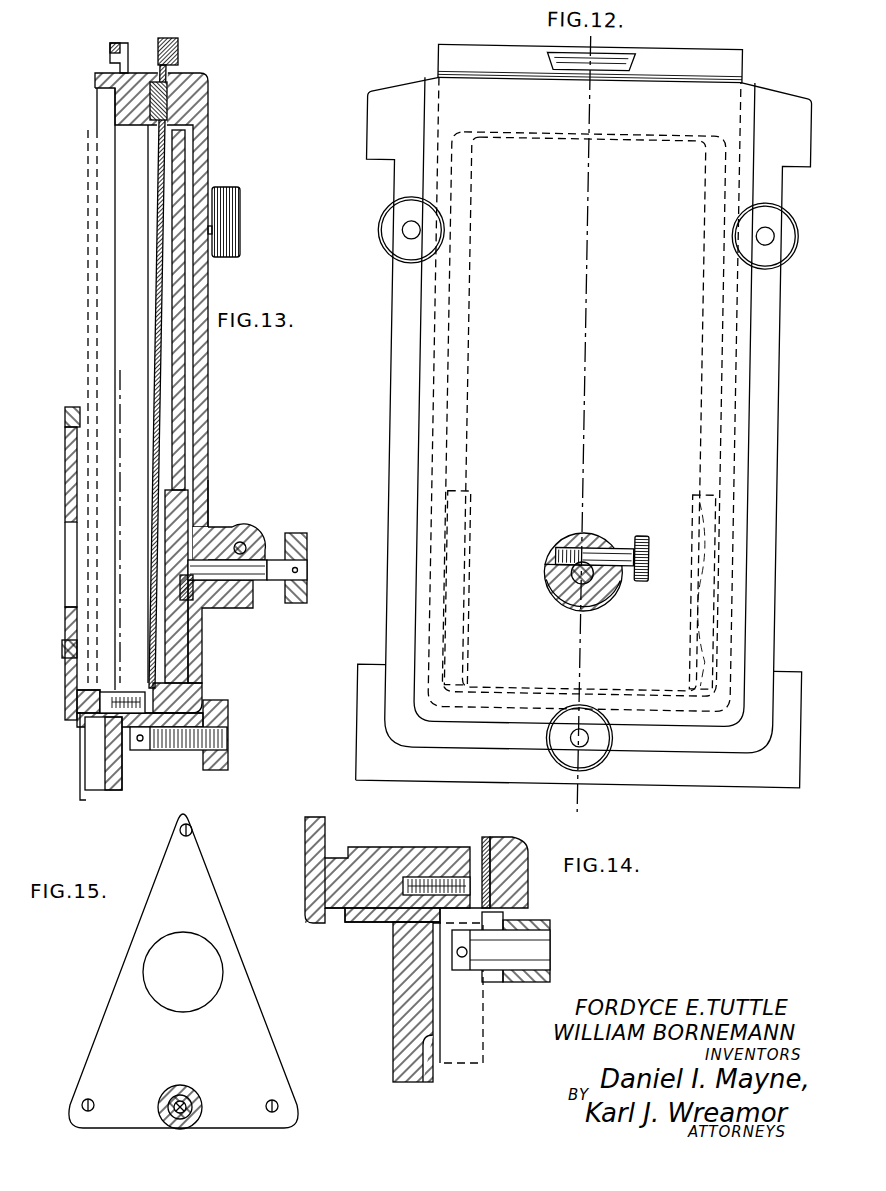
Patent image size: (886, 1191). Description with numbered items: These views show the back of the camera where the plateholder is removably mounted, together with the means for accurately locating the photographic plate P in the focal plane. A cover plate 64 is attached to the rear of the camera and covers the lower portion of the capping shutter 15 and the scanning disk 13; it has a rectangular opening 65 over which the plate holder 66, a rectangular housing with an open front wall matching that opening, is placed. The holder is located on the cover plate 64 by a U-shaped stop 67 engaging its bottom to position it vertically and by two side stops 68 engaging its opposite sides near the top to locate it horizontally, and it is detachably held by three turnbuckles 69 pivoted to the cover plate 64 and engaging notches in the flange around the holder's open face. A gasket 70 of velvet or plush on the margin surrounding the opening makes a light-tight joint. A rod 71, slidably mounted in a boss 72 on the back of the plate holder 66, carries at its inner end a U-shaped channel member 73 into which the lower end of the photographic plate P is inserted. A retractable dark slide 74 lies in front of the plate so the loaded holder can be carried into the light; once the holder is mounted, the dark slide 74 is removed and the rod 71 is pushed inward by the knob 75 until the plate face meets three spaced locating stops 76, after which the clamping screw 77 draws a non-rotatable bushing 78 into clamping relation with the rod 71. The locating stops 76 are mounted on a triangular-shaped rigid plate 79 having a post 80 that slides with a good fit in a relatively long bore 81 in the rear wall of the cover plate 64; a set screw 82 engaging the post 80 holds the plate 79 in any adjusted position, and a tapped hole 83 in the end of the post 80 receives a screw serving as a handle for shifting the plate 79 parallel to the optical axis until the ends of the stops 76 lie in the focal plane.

In FIG. 12, the scanning disk 13 is at (577, 36).
In FIG. 13, the capping shutter 15 is at (117, 586).
In FIG. 13, the photographic plate P is at (185, 372).
In FIG. 13, the cover plate 64 is at (115, 107).
In FIG. 12, the rectangular opening 65 is at (663, 136).
In FIG. 13, the rectangular opening 65 is at (137, 127).
In FIG. 12, the plate holder 66 is at (584, 414).
In FIG. 13, the plate holder 66 is at (204, 501).
In FIG. 12, the U-shaped stop 67 is at (579, 726).
In FIG. 12, the side stops 68 is at (792, 108).
In FIG. 12, the turnbuckles 69 is at (404, 237).
In FIG. 13, the turnbuckles 69 is at (229, 187).
In FIG. 14, the turnbuckles 69 is at (525, 972).
In FIG. 13, the gasket 70 is at (149, 80).
In FIG. 12, the rod 71 is at (563, 590).
In FIG. 13, the rod 71 is at (214, 568).
In FIG. 12, the boss 72 is at (598, 606).
In FIG. 13, the boss 72 is at (241, 606).
In FIG. 12, the U-shaped channel member 73 is at (492, 691).
In FIG. 13, the U-shaped channel member 73 is at (186, 684).
In FIG. 12, the dark slide 74 is at (432, 80).
In FIG. 13, the dark slide 74 is at (158, 335).
In FIG. 13, the knob 75 is at (305, 598).
In FIG. 13, the locating stops 76 is at (73, 407).
In FIG. 15, the locating stops 76 is at (193, 827).
In FIG. 12, the clamping screw 77 is at (616, 548).
In FIG. 13, the clamping screw 77 is at (246, 543).
In FIG. 12, the non-rotatable bushing 78 is at (566, 548).
In FIG. 13, the non-rotatable bushing 78 is at (243, 542).
In FIG. 13, the triangular-shaped rigid plate 79 is at (65, 484).
In FIG. 14, the triangular-shaped rigid plate 79 is at (317, 820).
In FIG. 15, the triangular-shaped rigid plate 79 is at (223, 912).
In FIG. 13, the post 80 is at (83, 704).
In FIG. 14, the post 80 is at (360, 858).
In FIG. 15, the post 80 is at (166, 1096).
In FIG. 13, the bore 81 is at (85, 727).
In FIG. 14, the bore 81 is at (370, 908).
In FIG. 15, the bore 81 is at (187, 1106).
In FIG. 13, the set screw 82 is at (132, 752).
In FIG. 14, the set screw 82 is at (433, 921).
In FIG. 13, the tapped hole 83 is at (122, 698).
In FIG. 14, the tapped hole 83 is at (432, 878).
In FIG. 15, the tapped hole 83 is at (194, 1095).